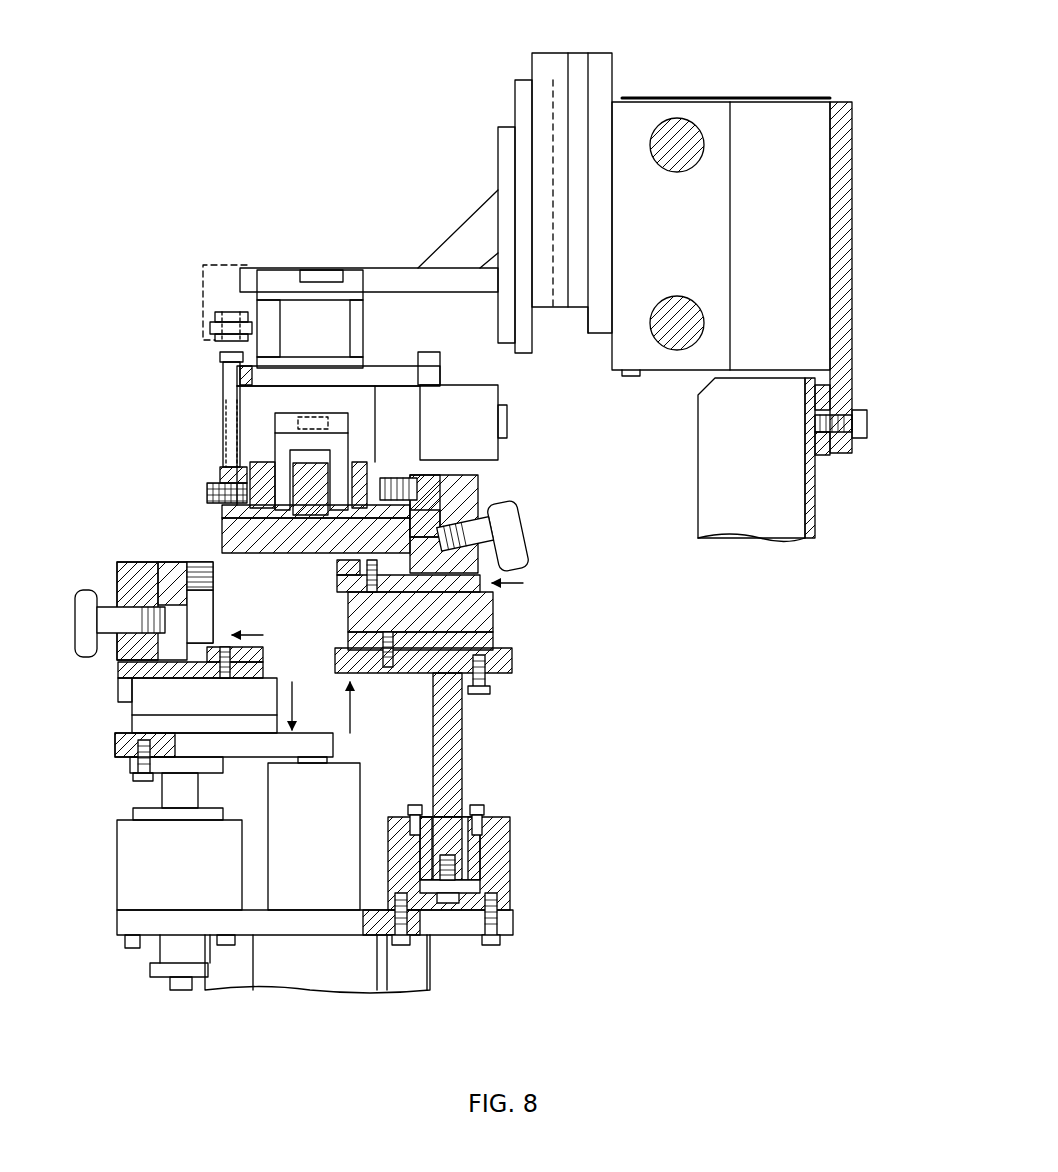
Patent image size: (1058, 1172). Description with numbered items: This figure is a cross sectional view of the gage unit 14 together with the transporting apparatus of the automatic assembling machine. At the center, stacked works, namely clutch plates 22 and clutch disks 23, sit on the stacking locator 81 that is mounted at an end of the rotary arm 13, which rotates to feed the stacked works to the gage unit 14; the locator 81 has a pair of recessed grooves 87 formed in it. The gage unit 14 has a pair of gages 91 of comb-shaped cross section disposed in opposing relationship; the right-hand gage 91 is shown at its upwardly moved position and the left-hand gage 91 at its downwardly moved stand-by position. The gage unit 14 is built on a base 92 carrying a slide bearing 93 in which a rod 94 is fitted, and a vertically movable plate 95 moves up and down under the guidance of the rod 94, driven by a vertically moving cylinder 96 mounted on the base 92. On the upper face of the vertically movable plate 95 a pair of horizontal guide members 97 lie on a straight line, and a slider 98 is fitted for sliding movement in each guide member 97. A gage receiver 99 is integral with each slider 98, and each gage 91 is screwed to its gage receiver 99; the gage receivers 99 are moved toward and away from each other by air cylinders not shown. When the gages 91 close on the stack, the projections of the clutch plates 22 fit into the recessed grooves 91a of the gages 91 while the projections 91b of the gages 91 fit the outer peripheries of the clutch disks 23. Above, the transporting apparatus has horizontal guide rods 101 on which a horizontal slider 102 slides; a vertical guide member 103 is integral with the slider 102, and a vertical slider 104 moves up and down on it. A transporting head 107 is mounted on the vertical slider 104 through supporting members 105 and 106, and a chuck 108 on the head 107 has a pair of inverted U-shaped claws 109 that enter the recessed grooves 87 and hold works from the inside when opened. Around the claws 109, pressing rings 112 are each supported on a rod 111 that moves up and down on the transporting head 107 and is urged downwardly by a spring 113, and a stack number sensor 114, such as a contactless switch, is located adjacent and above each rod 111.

The rotary arm 13 is at (317, 552).
The gage unit 14 is at (65, 512).
The clutch plate 22 is at (215, 483).
The clutch disk 23 is at (207, 492).
The stacking locator 81 is at (292, 547).
The recessed groove 87 is at (355, 470).
The gage 91 is at (120, 560).
The recessed groove 91a is at (157, 560).
The projection 91b is at (196, 562).
The base 92 is at (318, 930).
The slide bearing 93 is at (117, 880).
The rod 94 is at (175, 795).
The vertically movable plate 95 is at (115, 748).
The vertically moving cylinder 96 is at (345, 780).
The horizontal guide member 97 is at (140, 695).
The slider 98 is at (118, 668).
The gage receiver 99 is at (117, 563).
The guide rod 101 is at (695, 148).
The horizontal slider 102 is at (641, 98).
The vertical guide member 103 is at (548, 62).
The vertical slider 104 is at (513, 98).
The supporting member 105 is at (395, 268).
The supporting member 106 is at (340, 292).
The transporting head 107 is at (310, 372).
The chuck 108 is at (418, 398).
The claw 109 is at (342, 455).
The rod 111 is at (223, 400).
The pressing ring 112 is at (222, 470).
The spring 113 is at (240, 378).
The stack number sensor 114 is at (210, 330).